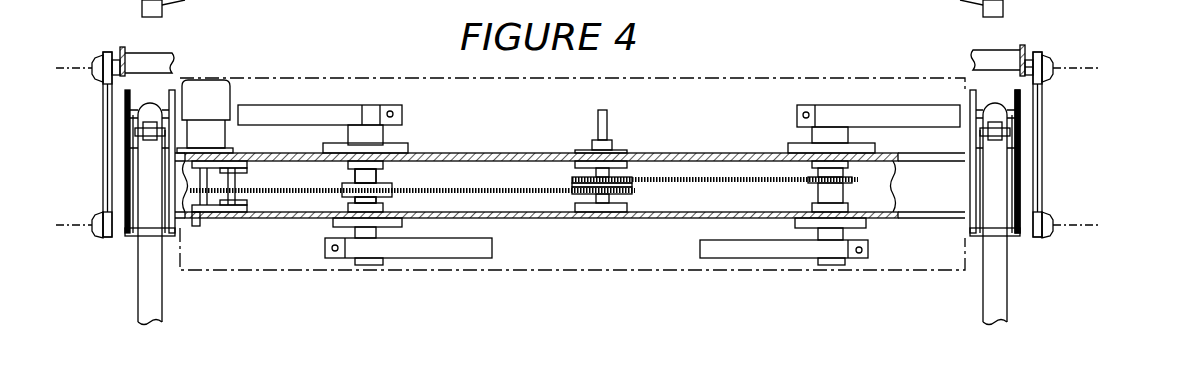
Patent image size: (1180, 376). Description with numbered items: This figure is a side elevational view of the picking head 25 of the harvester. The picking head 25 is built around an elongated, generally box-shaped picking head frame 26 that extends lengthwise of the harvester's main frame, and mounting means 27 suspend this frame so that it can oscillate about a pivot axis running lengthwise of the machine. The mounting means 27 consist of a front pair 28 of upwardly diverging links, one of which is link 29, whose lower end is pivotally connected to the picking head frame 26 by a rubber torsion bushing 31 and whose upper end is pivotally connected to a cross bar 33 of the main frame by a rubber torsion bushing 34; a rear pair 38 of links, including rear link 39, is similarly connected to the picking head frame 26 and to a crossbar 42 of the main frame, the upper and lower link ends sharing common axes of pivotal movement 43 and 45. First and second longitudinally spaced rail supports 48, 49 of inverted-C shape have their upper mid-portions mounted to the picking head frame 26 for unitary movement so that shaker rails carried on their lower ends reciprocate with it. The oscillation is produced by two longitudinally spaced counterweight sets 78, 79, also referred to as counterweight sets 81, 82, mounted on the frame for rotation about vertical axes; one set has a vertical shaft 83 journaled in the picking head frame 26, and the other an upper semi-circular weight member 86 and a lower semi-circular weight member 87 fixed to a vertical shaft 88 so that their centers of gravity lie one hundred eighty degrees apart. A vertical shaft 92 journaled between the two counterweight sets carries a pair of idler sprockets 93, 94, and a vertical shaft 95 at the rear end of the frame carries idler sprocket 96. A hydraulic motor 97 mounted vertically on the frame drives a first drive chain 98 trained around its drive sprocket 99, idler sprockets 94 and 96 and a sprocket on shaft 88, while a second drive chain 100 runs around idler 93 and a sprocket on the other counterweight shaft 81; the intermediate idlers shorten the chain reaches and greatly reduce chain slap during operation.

The picking head 25 is at (633, 282).
The picking head frame 26 is at (497, 217).
The mounting means 27 is at (80, 193).
The front pair of links 28 is at (1058, 152).
The link 29 is at (1043, 121).
The rubber torsion bushing 31 is at (1048, 238).
The cross bar 33 is at (1022, 50).
The rubber torsion bushing 34 is at (1048, 60).
The rear pair of links 38 is at (92, 157).
The rear link 39 is at (103, 116).
The crossbar 42 is at (128, 50).
The axis of pivotal movement 43 is at (64, 68).
The axis of pivotal movement 45 is at (63, 226).
The first rail support 48 is at (965, 298).
The second rail support 49 is at (178, 302).
The counterweight set 78 is at (738, 143).
The counterweight set 79 is at (425, 126).
The counterweight set shaft 81 is at (840, 193).
The counterweight set 82 is at (882, 108).
The vertical shaft 83 is at (763, 252).
The upper semi-circular weight member 86 is at (318, 110).
The lower semi-circular weight member 87 is at (465, 255).
The vertical shaft 88 is at (372, 175).
The vertical shaft 92 is at (598, 125).
The idler sprocket 93 is at (608, 178).
The idler sprocket 94 is at (625, 195).
The vertical shaft 95 is at (236, 178).
The idler sprocket 96 is at (246, 196).
The hydraulic motor 97 is at (222, 98).
The first drive chain 98 is at (530, 185).
The drive sprocket 99 is at (192, 197).
The second drive chain 100 is at (770, 183).